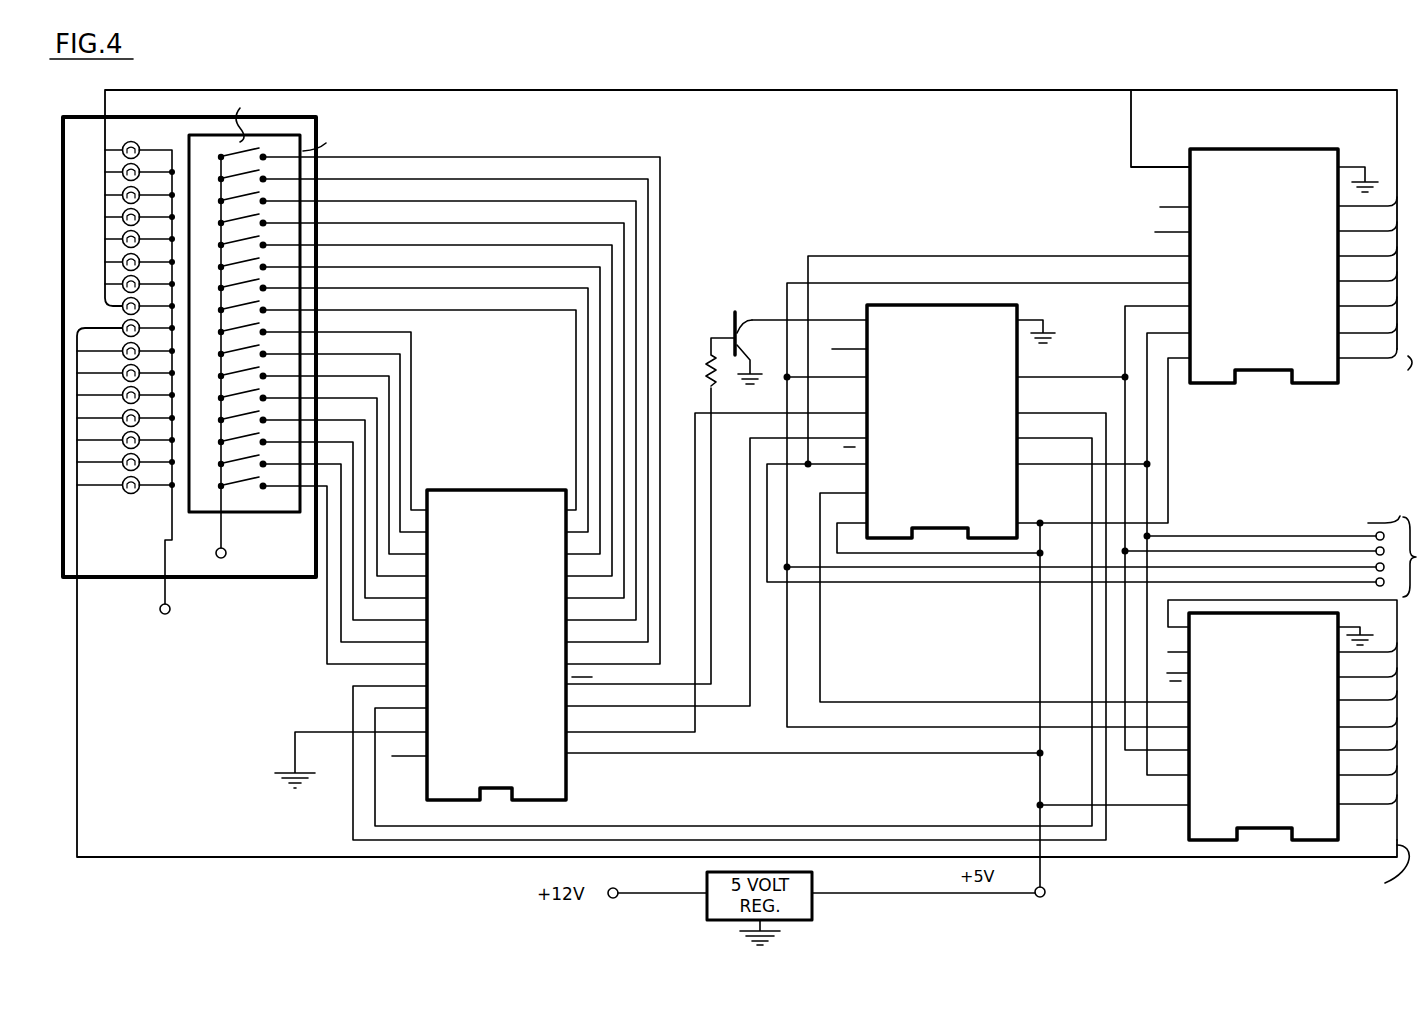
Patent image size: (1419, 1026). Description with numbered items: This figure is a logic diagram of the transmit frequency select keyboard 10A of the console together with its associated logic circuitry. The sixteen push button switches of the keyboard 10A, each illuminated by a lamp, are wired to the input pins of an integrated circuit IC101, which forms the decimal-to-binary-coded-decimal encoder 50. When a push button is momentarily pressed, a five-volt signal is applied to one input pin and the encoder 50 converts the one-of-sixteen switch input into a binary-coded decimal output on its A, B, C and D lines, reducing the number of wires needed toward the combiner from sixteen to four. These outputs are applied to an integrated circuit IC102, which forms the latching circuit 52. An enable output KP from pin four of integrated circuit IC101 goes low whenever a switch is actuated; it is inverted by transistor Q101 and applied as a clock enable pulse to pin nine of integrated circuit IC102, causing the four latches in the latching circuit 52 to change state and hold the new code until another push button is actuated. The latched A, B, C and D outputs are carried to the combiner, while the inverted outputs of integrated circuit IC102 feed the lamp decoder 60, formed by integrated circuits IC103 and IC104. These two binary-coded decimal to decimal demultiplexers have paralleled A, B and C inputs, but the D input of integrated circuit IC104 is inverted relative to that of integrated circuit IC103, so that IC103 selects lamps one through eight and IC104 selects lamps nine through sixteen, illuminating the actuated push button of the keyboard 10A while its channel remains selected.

The transmit frequency select keyboard 10A is at (166, 104).
The encoder 50 is at (690, 614).
The latching circuit 52 is at (1034, 571).
The lamp decoder 60 is at (1269, 507).
The integrated circuit IC101 is at (562, 782).
The integrated circuit IC102 is at (1040, 306).
The integrated circuit IC103 is at (1246, 168).
The integrated circuit IC104 is at (1218, 830).
The transistor Q101 is at (744, 286).